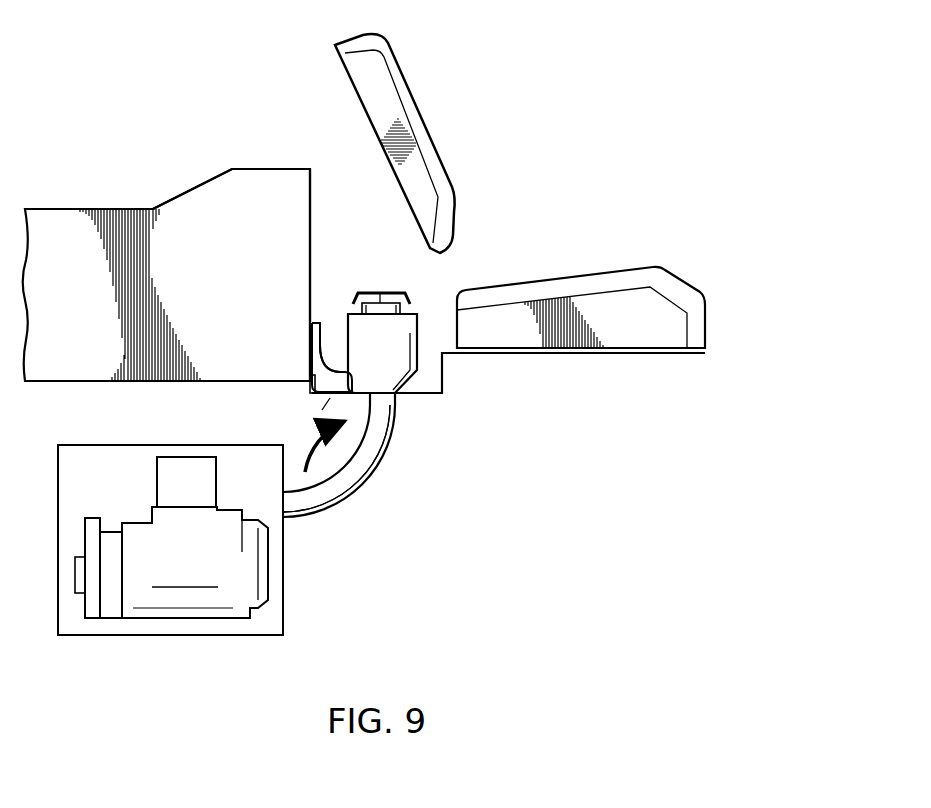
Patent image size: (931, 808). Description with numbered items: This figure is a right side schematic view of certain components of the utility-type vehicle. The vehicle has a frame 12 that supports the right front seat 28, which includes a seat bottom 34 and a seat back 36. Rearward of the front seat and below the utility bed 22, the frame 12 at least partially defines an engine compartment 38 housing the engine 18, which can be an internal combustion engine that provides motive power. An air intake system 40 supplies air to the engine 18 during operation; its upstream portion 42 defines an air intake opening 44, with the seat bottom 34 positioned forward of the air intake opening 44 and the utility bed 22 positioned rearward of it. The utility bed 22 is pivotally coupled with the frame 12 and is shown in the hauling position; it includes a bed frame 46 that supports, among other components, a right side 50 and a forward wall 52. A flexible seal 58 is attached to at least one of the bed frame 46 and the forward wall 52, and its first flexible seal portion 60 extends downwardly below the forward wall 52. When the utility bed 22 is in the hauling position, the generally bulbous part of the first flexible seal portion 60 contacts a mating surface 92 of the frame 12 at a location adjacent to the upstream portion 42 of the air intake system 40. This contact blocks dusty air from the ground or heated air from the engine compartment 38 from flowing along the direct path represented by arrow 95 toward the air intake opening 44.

The frame 12 is at (663, 364).
The engine 18 is at (157, 480).
The utility bed 22 is at (101, 178).
The right front seat 28 is at (565, 80).
The seat bottom 34 is at (582, 276).
The seat back 36 is at (415, 98).
The engine compartment 38 is at (85, 453).
The air intake system 40 is at (388, 465).
The upstream portion 42 is at (417, 328).
The air intake opening 44 is at (380, 295).
The bed frame 46 is at (308, 387).
The right side 50 is at (193, 203).
The forward wall 52 is at (310, 221).
The flexible seal 58 is at (325, 307).
The first flexible seal portion 60 is at (323, 350).
The mating surface 92 is at (440, 377).
The arrow 95 is at (338, 462).